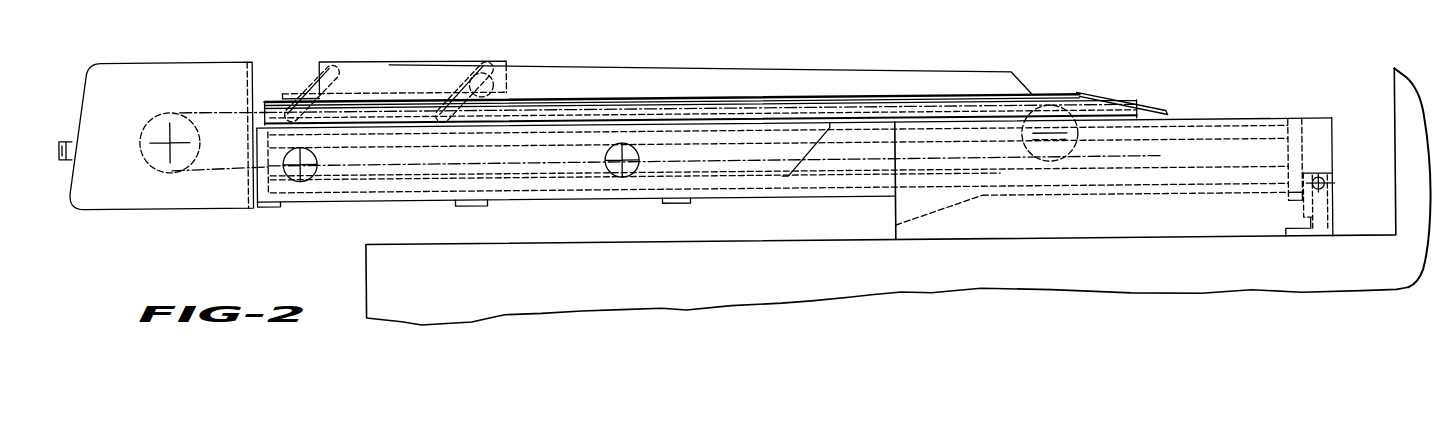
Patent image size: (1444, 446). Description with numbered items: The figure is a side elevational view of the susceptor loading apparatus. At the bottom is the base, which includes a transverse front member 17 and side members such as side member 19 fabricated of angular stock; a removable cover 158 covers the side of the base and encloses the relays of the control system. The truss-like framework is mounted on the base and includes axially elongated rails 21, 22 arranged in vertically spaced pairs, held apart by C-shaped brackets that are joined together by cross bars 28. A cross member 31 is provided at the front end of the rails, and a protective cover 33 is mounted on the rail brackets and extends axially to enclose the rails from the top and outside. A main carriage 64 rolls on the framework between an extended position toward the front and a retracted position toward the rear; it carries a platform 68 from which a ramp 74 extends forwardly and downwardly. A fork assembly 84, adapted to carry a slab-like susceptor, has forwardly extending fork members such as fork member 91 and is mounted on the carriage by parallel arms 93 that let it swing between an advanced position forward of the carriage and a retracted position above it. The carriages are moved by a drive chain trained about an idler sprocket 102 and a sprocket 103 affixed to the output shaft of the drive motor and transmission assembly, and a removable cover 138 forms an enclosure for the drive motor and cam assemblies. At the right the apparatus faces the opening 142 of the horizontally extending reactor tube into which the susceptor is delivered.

The removable cover 138 is at (203, 38).
The sprocket 103 is at (180, 92).
The parallel arms 93 is at (315, 97).
The fork assembly 84 is at (408, 54).
The fork member 91 is at (665, 73).
The platform 68 is at (1037, 95).
The main carriage 64 is at (1080, 92).
The ramp 74 is at (1132, 108).
The protective cover 33 is at (548, 160).
The rail 21 is at (1207, 128).
The rail 22 is at (1210, 155).
The cross bars 28 is at (267, 209).
The idler sprocket 102 is at (1068, 150).
The side member 19 is at (1183, 225).
The opening 142 is at (1407, 66).
The cross member 31 is at (1297, 118).
The removable cover 158 is at (1325, 120).
The transverse front member 17 is at (1330, 213).